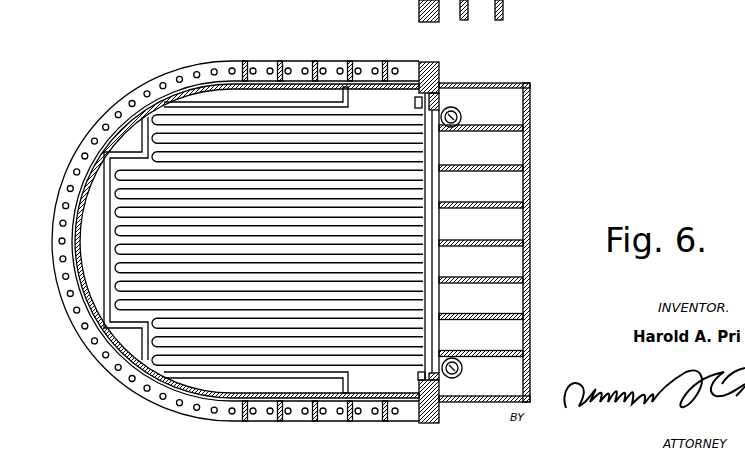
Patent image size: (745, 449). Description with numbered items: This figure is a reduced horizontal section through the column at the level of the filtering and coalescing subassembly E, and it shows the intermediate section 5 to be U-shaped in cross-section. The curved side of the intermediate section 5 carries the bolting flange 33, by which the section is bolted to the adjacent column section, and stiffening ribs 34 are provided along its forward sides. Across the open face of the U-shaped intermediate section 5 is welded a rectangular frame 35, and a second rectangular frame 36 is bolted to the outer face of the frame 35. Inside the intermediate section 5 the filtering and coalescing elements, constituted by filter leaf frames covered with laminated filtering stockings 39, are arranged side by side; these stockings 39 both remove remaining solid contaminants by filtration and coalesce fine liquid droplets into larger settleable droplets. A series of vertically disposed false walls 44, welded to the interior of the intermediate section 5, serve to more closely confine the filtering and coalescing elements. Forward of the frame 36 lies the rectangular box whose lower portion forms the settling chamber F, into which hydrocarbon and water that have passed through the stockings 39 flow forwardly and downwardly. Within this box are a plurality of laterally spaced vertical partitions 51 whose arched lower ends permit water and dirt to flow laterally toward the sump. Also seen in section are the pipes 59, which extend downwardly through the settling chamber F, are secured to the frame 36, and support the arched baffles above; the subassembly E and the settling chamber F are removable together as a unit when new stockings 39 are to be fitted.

The intermediate section 5 is at (123, 128).
The flange 33 is at (128, 390).
The stiffening ribs 34 is at (345, 63).
The rectangular frame 35 is at (419, 22).
The rectangular frame 36 is at (439, 22).
The laminated filtering stocking 39 is at (361, 363).
The false walls 44 is at (263, 101).
The vertical partitions 51 is at (505, 210).
The pipe 59 is at (452, 108).
The filtering and coalescing subassembly E is at (130, 82).
The settling chamber F is at (505, 72).